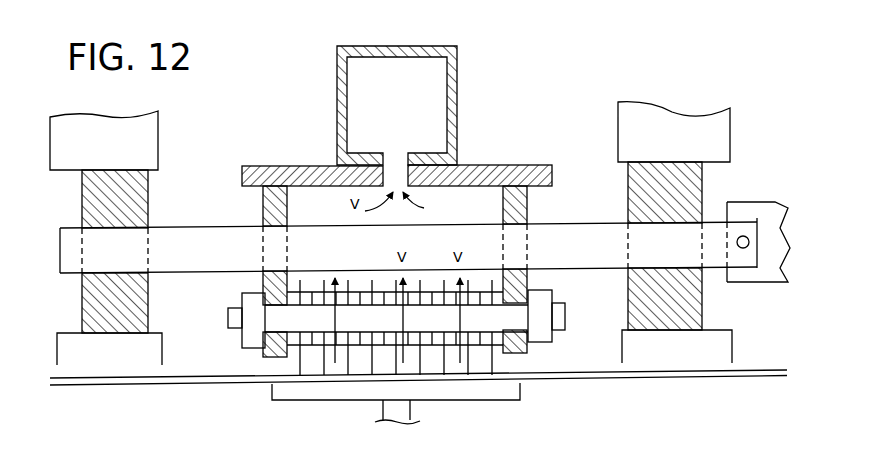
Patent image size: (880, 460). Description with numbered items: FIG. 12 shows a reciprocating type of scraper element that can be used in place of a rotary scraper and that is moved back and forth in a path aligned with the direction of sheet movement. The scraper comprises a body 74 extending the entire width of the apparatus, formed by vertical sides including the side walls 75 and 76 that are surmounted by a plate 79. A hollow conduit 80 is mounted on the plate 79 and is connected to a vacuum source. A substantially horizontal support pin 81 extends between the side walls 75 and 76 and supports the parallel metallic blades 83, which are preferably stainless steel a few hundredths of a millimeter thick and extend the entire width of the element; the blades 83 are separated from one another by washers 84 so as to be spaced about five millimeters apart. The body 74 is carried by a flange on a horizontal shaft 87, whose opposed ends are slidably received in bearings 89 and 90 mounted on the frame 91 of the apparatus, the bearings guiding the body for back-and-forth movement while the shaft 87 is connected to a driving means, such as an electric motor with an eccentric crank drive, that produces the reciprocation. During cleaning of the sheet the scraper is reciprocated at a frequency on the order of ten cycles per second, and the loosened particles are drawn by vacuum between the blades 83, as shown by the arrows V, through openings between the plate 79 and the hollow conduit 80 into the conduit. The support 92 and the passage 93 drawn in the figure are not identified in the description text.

The body 74 is at (468, 164).
The vertical side 75 is at (263, 202).
The vertical side 76 is at (511, 186).
The plate 79 is at (273, 177).
The hollow conduit 80 is at (345, 55).
The support pin 81 is at (510, 318).
The metallic blades 83 is at (472, 356).
The washers 84 is at (343, 340).
The horizontal shaft 87 is at (97, 263).
The bearing 89 is at (90, 193).
The bearing 90 is at (702, 182).
The frame 91 is at (135, 140).
The support 92 is at (435, 393).
The suction slot 93 is at (398, 155).